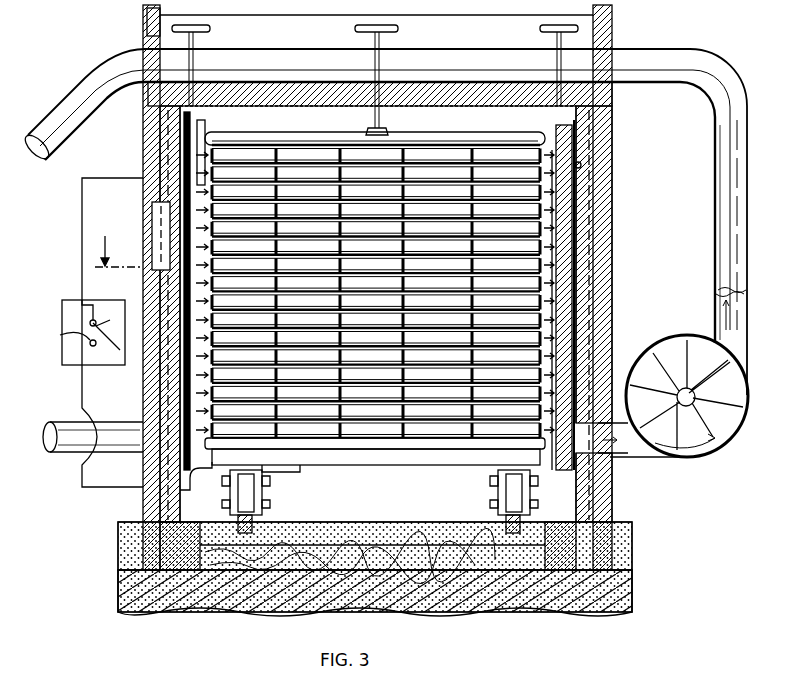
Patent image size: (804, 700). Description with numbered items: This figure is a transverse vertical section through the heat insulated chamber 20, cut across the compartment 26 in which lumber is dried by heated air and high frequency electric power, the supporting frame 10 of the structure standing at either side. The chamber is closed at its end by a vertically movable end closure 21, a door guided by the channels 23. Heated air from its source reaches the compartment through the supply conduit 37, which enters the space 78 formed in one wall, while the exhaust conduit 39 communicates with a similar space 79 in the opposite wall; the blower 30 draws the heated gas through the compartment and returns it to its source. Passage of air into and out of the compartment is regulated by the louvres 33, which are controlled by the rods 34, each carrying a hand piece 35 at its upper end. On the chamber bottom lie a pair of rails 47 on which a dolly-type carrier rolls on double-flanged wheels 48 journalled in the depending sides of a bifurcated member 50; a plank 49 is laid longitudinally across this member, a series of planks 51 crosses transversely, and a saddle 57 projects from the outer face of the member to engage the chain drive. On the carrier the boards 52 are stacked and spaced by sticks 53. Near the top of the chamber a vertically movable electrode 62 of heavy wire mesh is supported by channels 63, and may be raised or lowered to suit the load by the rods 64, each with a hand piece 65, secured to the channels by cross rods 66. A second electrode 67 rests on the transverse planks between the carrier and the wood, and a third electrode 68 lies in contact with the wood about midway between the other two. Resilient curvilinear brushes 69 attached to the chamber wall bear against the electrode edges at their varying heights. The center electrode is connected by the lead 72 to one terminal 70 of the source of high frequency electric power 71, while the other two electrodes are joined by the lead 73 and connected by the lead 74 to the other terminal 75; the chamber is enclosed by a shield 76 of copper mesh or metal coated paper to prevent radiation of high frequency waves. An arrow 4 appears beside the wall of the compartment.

The direction arrow 4 is at (117, 242).
The frame posts 10 is at (143, 505).
The heat insulated chamber 20 is at (160, 148).
The movable end closure 21 is at (290, 28).
The channel 23 is at (143, 22).
The compartment 26 is at (415, 135).
The blower 30 is at (705, 460).
The louvres 33 is at (190, 380).
The rod 34 is at (197, 46).
The hand piece 35 is at (190, 26).
The supply conduit 37 is at (58, 455).
The exhaust conduit 39 is at (62, 110).
The rails 47 is at (252, 524).
The wheels 48 is at (262, 492).
The plank 49 is at (210, 490).
The bifurcated member 50 is at (268, 470).
The planks 51 is at (326, 465).
The boards 52 is at (580, 240).
The sticks 53 is at (590, 255).
The saddle 57 is at (530, 490).
The vertically movable electrode 62 is at (285, 140).
The channels 63 is at (205, 140).
The rods 64 is at (382, 30).
The hand piece 65 is at (358, 30).
The cross rods 66 is at (498, 140).
The electrode 67 is at (424, 450).
The third electrode 68 is at (572, 285).
The brushes 69 is at (183, 122).
The terminal 70 is at (94, 303).
The source of high frequency electric power 71 is at (62, 366).
The lead 72 is at (122, 336).
The lead 73 is at (82, 240).
The lead 74 is at (90, 344).
The terminal 75 is at (60, 335).
The shield 76 is at (581, 165).
The space 78 is at (152, 212).
The space 79 is at (590, 310).